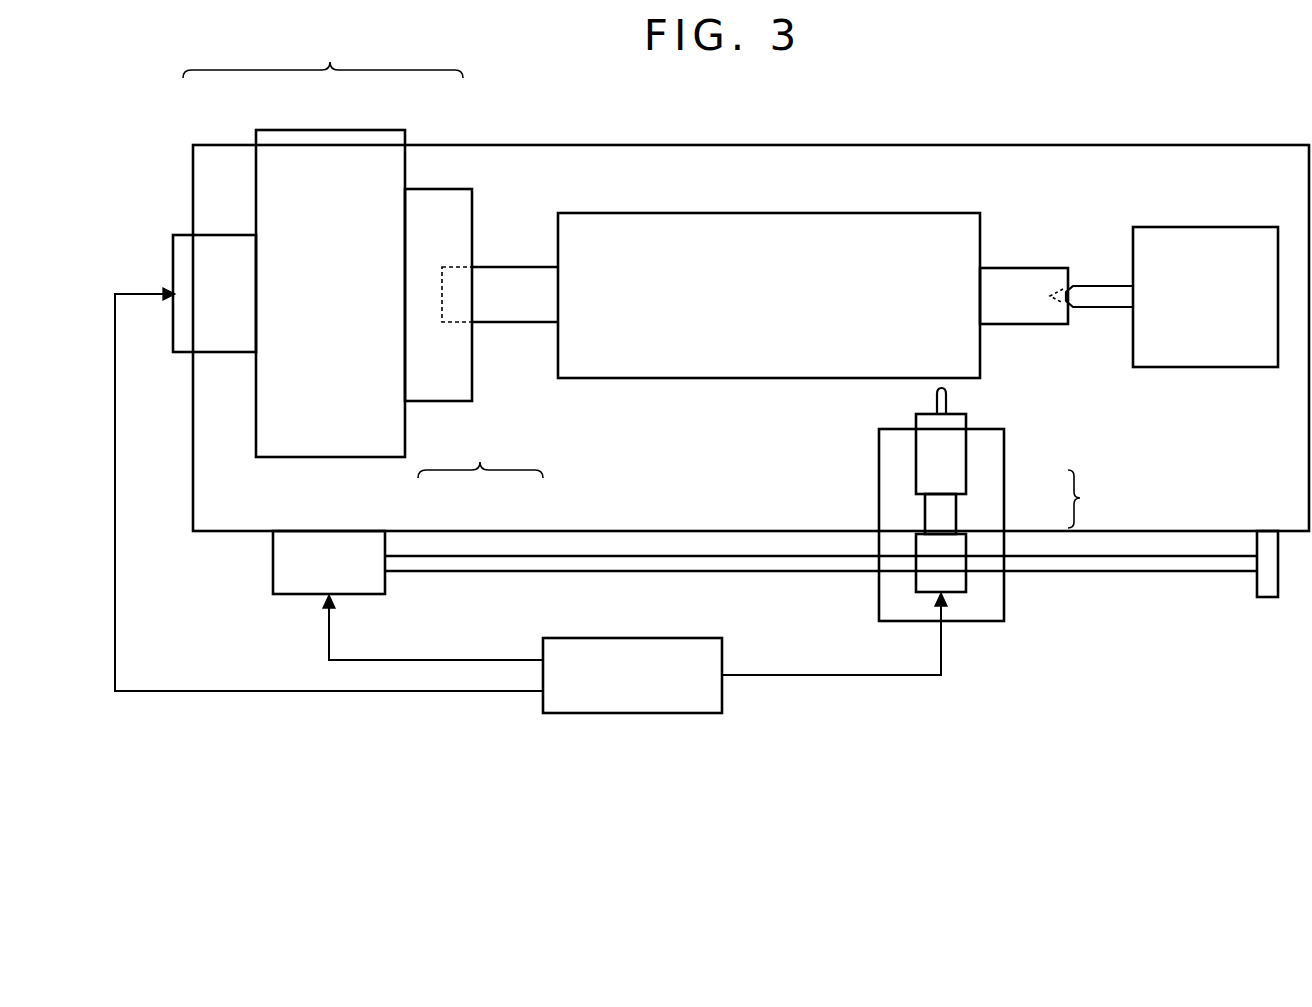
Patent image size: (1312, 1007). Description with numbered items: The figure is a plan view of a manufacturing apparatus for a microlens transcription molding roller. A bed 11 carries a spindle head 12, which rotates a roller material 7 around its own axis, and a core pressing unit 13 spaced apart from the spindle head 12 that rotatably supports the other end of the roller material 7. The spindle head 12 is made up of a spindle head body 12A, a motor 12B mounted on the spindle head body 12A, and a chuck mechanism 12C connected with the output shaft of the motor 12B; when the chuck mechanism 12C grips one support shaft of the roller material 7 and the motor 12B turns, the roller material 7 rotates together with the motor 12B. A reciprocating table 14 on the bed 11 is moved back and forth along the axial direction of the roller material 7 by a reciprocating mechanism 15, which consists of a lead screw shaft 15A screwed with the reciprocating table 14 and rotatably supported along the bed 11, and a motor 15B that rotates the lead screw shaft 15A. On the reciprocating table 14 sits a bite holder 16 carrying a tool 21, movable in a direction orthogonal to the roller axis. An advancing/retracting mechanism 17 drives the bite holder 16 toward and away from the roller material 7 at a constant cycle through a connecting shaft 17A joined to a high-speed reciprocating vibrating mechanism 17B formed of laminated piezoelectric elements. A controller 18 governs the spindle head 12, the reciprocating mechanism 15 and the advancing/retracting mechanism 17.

The roller material 7 is at (915, 213).
The bed 11 is at (637, 152).
The spindle head 12 is at (323, 58).
The spindle head body 12A is at (328, 152).
The motor 12B is at (214, 235).
The chuck mechanism 12C is at (441, 189).
The core pressing unit 13 is at (1205, 227).
The reciprocating table 14 is at (879, 478).
The reciprocating mechanism 15 is at (480, 457).
The lead screw shaft 15A is at (518, 556).
The motor 15B is at (350, 541).
The bite holder 16 is at (966, 452).
The advancing/retracting mechanism 17 is at (1089, 499).
The connecting shaft 17A is at (956, 512).
The high-speed reciprocating vibrating mechanism 17B is at (966, 552).
The controller 18 is at (635, 638).
The tool 21 is at (946, 402).